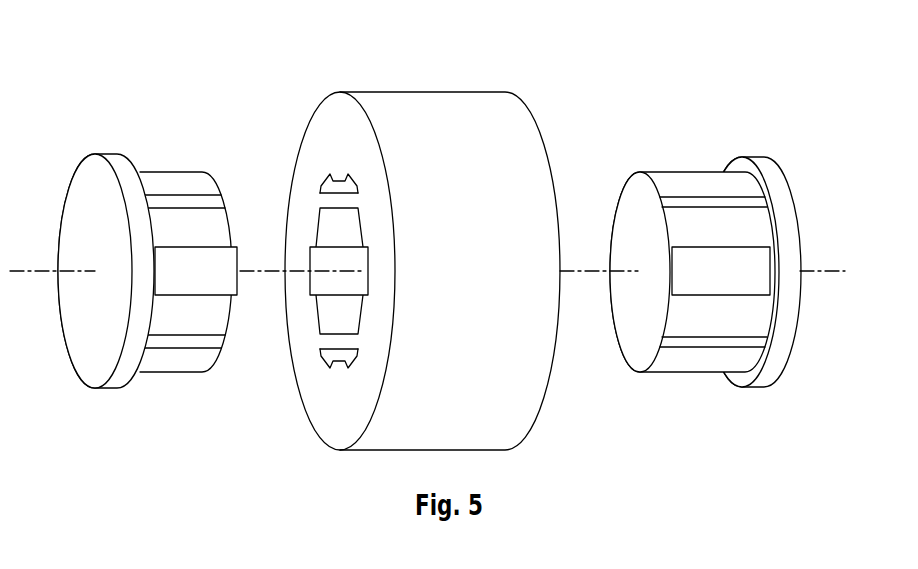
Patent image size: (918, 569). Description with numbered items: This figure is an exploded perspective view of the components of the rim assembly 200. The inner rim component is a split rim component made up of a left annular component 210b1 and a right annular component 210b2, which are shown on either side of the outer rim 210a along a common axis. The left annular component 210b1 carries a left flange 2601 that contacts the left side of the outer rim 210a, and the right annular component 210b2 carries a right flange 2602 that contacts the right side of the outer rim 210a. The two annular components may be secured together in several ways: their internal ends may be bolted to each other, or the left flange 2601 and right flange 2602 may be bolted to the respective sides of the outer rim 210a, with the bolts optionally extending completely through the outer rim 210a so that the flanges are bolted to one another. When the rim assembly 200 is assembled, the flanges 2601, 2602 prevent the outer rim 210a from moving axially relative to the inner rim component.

The rim assembly 200 is at (427, 228).
The outer rim 210a is at (434, 92).
The left annular component 210b1 is at (183, 171).
The right annular component 210b2 is at (692, 171).
The left flange 2601 is at (117, 163).
The right flange 2602 is at (755, 155).